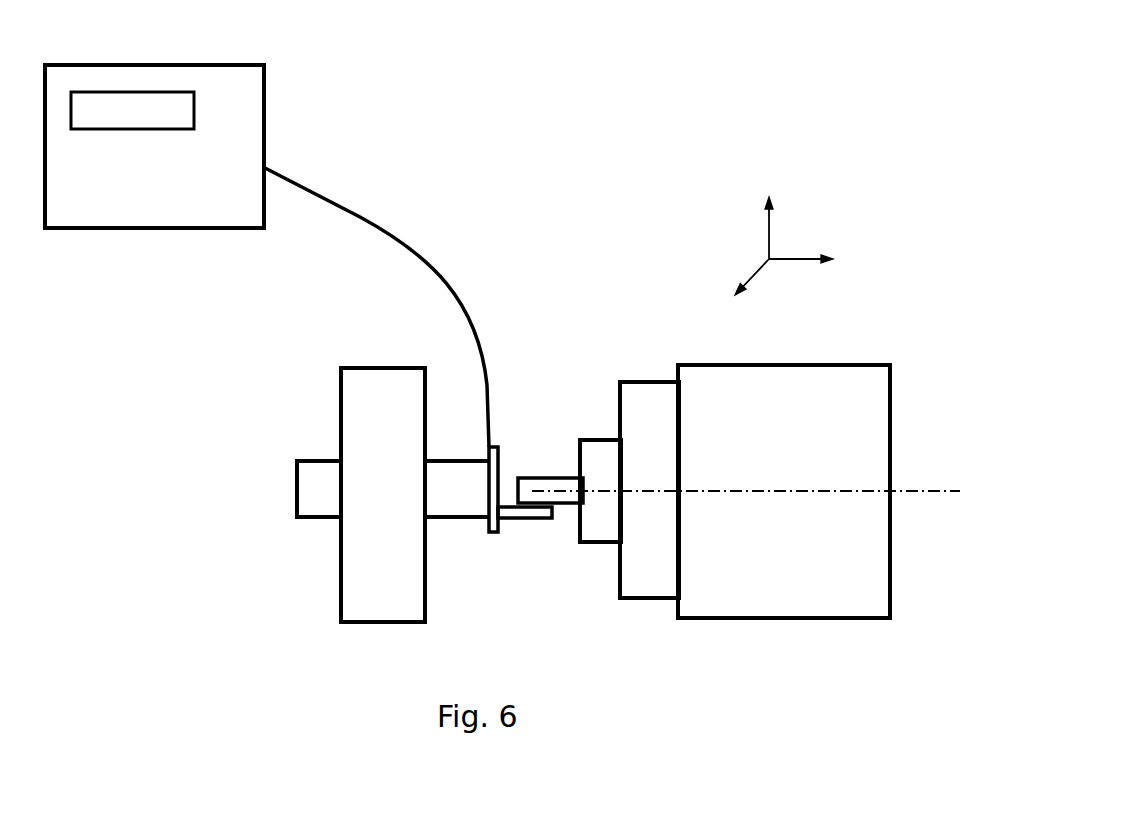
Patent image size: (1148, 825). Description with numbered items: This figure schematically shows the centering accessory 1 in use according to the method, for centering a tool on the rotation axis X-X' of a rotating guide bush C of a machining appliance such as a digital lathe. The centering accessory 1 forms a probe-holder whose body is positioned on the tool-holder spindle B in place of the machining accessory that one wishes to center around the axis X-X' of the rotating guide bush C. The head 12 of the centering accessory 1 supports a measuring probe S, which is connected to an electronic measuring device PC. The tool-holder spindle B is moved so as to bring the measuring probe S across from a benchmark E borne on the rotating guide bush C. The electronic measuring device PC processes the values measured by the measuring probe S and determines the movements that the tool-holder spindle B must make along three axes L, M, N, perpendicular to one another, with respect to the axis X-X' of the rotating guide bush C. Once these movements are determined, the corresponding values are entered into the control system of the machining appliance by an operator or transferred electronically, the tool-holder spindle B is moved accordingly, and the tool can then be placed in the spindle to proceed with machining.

The electronic measuring device PC is at (160, 191).
The tool-holder spindle B is at (348, 385).
The centering accessory 1 is at (464, 529).
The measuring probe S is at (507, 502).
The head 12 is at (517, 527).
The benchmark E is at (538, 477).
The rotating guide bush C is at (602, 450).
The rotation axis X-X' is at (746, 531).
The axis L is at (764, 209).
The axis M is at (734, 290).
The axis N is at (813, 250).